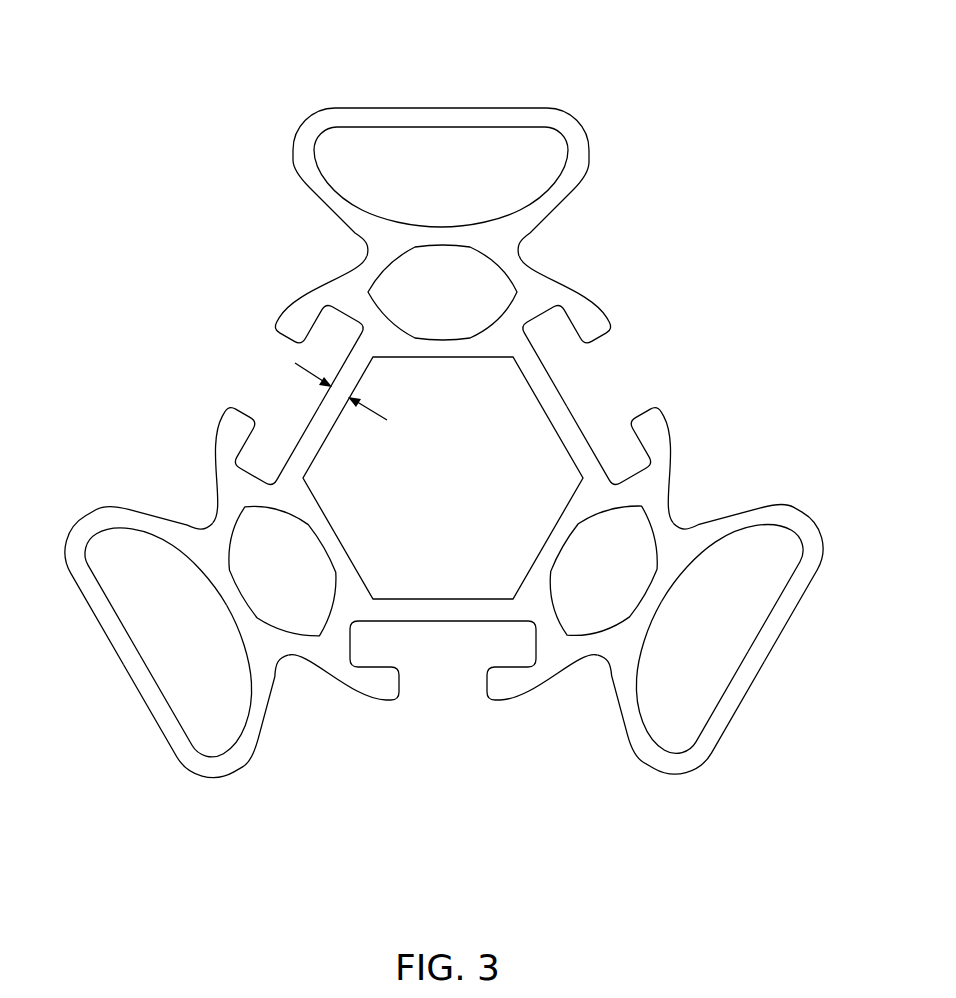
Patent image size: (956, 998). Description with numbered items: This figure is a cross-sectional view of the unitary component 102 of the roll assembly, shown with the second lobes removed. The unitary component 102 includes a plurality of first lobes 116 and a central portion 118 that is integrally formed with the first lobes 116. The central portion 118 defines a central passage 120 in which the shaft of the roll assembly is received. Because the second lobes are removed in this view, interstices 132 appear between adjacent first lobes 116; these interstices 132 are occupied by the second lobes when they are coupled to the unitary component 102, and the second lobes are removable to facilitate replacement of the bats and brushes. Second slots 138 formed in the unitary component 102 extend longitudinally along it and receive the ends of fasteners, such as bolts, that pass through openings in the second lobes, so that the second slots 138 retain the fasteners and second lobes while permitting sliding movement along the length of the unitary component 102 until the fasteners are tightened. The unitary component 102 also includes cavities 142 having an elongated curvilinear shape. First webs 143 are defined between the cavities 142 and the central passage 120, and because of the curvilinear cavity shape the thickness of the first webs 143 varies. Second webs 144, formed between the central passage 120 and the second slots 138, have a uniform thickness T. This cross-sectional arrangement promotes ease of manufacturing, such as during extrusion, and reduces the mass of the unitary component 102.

The unitary component 102 is at (172, 120).
The first lobes 116 is at (443, 106).
The central portion 118 is at (213, 478).
The central passage 120 is at (465, 516).
The interstices 132 is at (231, 369).
The second slots 138 is at (303, 398).
The cavities 142 is at (452, 302).
The first webs 143 is at (447, 340).
The second webs 144 is at (557, 410).